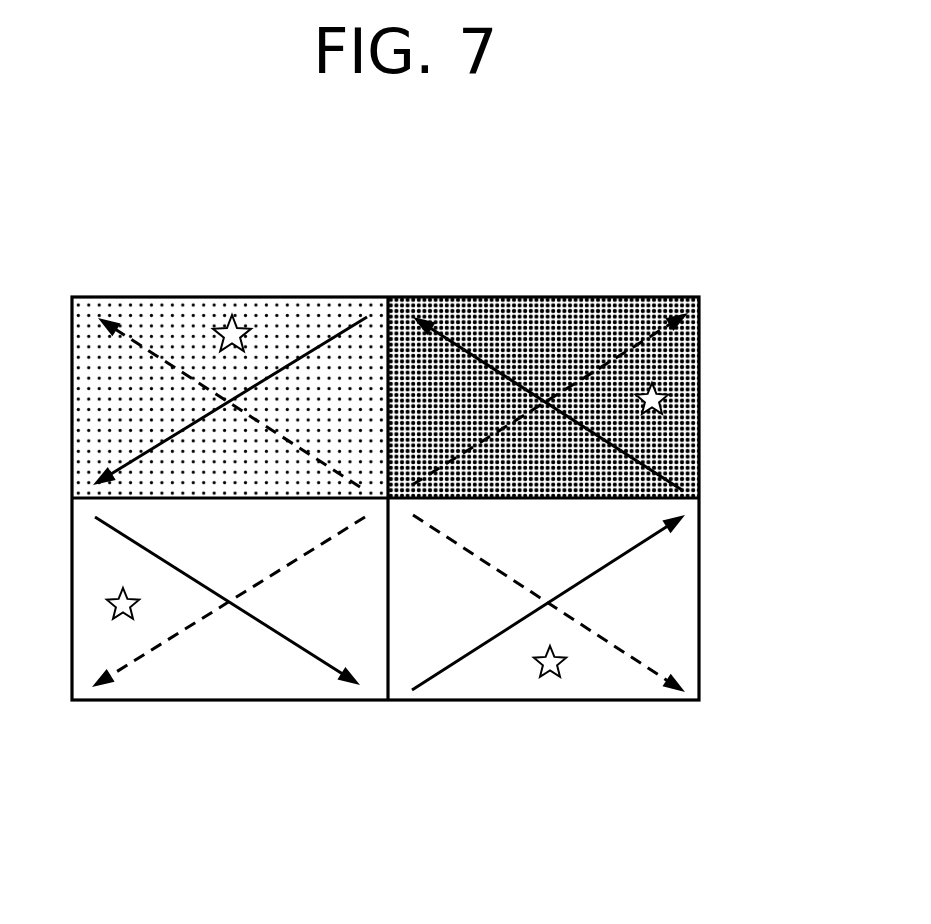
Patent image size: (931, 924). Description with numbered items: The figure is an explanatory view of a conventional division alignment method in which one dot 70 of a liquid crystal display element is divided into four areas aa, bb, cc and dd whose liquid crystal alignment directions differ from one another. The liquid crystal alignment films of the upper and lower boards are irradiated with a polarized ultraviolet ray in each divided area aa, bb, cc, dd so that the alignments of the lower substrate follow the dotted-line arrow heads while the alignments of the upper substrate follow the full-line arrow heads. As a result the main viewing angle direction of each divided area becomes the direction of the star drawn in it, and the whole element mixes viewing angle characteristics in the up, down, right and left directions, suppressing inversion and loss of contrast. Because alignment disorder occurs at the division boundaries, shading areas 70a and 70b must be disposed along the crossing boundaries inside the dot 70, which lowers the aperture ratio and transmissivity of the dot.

The dot 70 is at (678, 246).
The shading area 70a is at (390, 699).
The shading area 70b is at (638, 502).
The divided area aa is at (158, 318).
The divided area bb is at (567, 343).
The divided area cc is at (620, 678).
The divided area dd is at (225, 699).